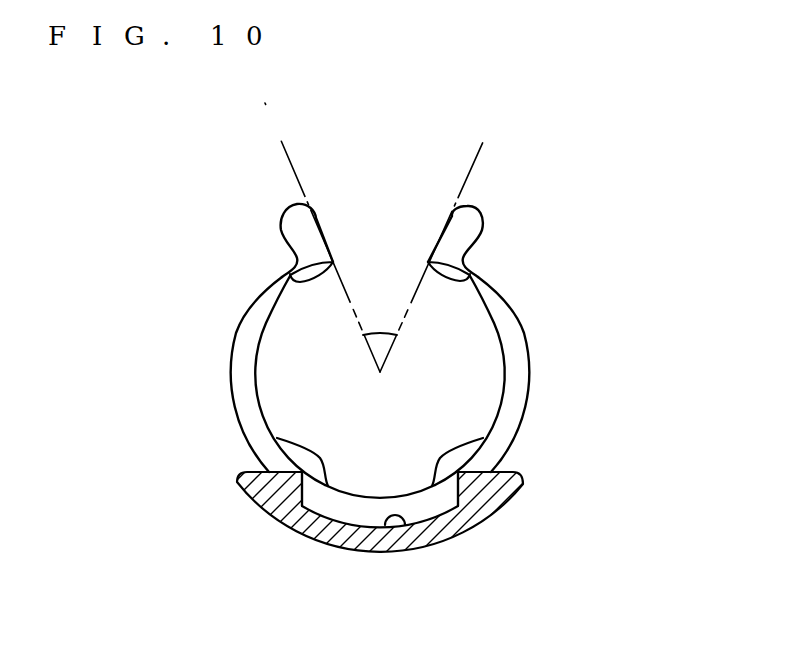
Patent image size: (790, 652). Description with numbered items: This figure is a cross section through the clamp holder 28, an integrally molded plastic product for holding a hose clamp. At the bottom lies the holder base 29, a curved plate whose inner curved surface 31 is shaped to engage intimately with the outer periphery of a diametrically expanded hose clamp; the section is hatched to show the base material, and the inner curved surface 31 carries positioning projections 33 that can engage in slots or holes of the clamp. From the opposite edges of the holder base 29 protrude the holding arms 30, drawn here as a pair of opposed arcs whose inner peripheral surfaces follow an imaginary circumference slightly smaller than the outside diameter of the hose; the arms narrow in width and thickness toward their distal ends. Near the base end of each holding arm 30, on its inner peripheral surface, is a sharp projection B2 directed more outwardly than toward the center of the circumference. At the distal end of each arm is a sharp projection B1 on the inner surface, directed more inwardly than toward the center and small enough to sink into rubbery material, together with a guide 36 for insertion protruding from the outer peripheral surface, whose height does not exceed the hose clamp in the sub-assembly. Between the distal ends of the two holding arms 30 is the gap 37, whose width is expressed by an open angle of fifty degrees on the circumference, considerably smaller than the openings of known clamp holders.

The clamp holder 28 is at (235, 460).
The holder base 29 is at (305, 532).
The holding arm 30 is at (243, 313).
The inner curved surface 31 is at (402, 520).
The positioning projection 33 is at (260, 500).
The guide for insertion 36 is at (284, 214).
The gap 37 is at (373, 240).
The sharp projection B1 is at (284, 272).
The sharp projection B2 is at (300, 447).